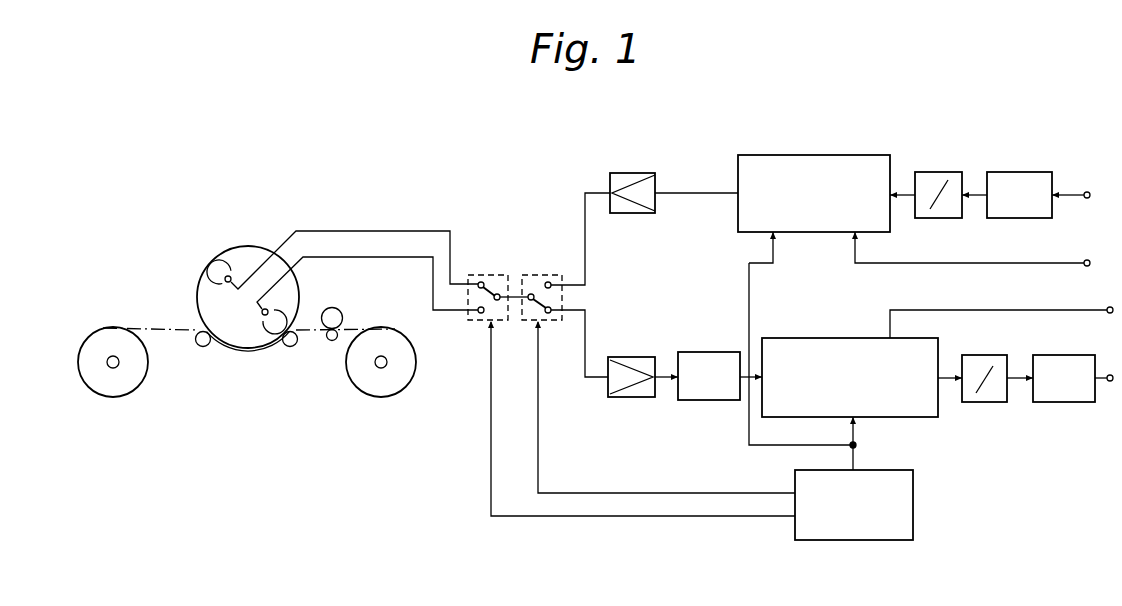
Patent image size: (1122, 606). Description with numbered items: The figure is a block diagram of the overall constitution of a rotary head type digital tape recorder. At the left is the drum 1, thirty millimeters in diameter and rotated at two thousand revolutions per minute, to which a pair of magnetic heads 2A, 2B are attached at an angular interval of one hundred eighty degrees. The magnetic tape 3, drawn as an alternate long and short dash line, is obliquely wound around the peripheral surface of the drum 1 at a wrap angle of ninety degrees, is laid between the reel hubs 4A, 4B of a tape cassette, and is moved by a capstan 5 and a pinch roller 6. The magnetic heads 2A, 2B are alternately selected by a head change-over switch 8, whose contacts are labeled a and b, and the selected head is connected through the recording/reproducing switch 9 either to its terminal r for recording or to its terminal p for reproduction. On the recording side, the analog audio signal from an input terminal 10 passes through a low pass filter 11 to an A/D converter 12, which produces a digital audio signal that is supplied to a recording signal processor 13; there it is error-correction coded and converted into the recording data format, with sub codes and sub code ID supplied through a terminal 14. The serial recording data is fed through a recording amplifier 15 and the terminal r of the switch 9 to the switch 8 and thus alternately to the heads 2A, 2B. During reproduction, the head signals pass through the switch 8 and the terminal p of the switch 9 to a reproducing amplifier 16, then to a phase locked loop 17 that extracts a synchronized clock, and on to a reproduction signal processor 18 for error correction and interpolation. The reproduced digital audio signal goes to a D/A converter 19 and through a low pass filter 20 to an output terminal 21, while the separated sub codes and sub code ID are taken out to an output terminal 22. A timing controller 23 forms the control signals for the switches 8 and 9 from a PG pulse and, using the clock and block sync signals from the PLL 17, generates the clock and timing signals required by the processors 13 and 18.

The drum 1 is at (196, 294).
The magnetic head 2A is at (256, 348).
The magnetic head 2B is at (222, 259).
The magnetic tape 3 is at (162, 331).
The reel hub 4A is at (126, 396).
The reel hub 4B is at (382, 397).
The capstan 5 is at (330, 342).
The pinch roller 6 is at (334, 309).
The head change-over switch 8 is at (482, 317).
The recording/reproducing switch 9 is at (566, 294).
The switch terminal a is at (479, 314).
The switch terminal b is at (482, 281).
The terminal r is at (547, 281).
The terminal p is at (550, 316).
The input terminal 10 is at (1087, 192).
The low pass filter 11 is at (1030, 219).
The A/D converter 12 is at (952, 219).
The recording signal processor 13 is at (890, 232).
The terminal 14 is at (1087, 260).
The recording amplifier 15 is at (633, 214).
The reproducing amplifier 16 is at (630, 398).
The phase locked loop 17 is at (713, 401).
The reproduction signal processor 18 is at (907, 418).
The D/A converter 19 is at (990, 403).
The low pass filter 20 is at (1068, 403).
The output terminal 21 is at (1110, 381).
The output terminal 22 is at (1108, 308).
The timing controller 23 is at (913, 512).